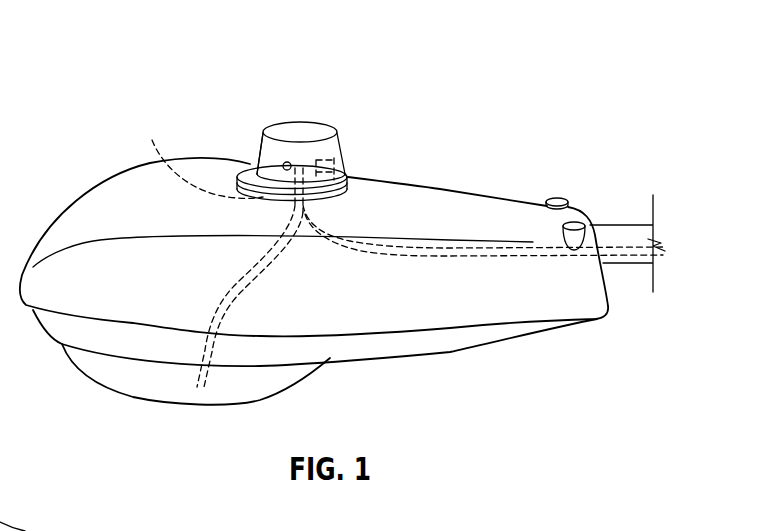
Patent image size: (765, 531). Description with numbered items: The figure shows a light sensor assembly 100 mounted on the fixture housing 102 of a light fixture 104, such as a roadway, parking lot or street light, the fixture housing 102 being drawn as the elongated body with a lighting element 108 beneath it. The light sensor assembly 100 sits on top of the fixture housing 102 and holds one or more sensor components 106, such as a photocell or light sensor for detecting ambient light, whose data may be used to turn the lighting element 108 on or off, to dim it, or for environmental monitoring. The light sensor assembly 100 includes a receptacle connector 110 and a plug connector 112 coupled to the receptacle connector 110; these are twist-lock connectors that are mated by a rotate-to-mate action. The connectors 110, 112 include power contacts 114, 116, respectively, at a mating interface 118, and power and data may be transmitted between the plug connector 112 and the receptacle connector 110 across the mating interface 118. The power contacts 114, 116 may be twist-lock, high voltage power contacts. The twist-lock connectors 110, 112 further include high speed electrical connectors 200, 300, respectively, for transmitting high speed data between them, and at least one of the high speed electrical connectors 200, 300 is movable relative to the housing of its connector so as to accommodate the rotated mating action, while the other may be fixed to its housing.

The light sensor assembly 100 is at (280, 48).
The fixture housing 102 is at (500, 223).
The light fixture 104 is at (445, 180).
The sensor component 106 is at (284, 162).
The lighting element 108 is at (118, 396).
The receptacle connector 110 is at (238, 176).
The plug connector 112 is at (272, 153).
The power contact 114 is at (197, 154).
The power contact 116 is at (304, 168).
The mating interface 118 is at (362, 168).
The high speed electrical connector 200 is at (350, 183).
The high speed electrical connector 300 is at (332, 144).